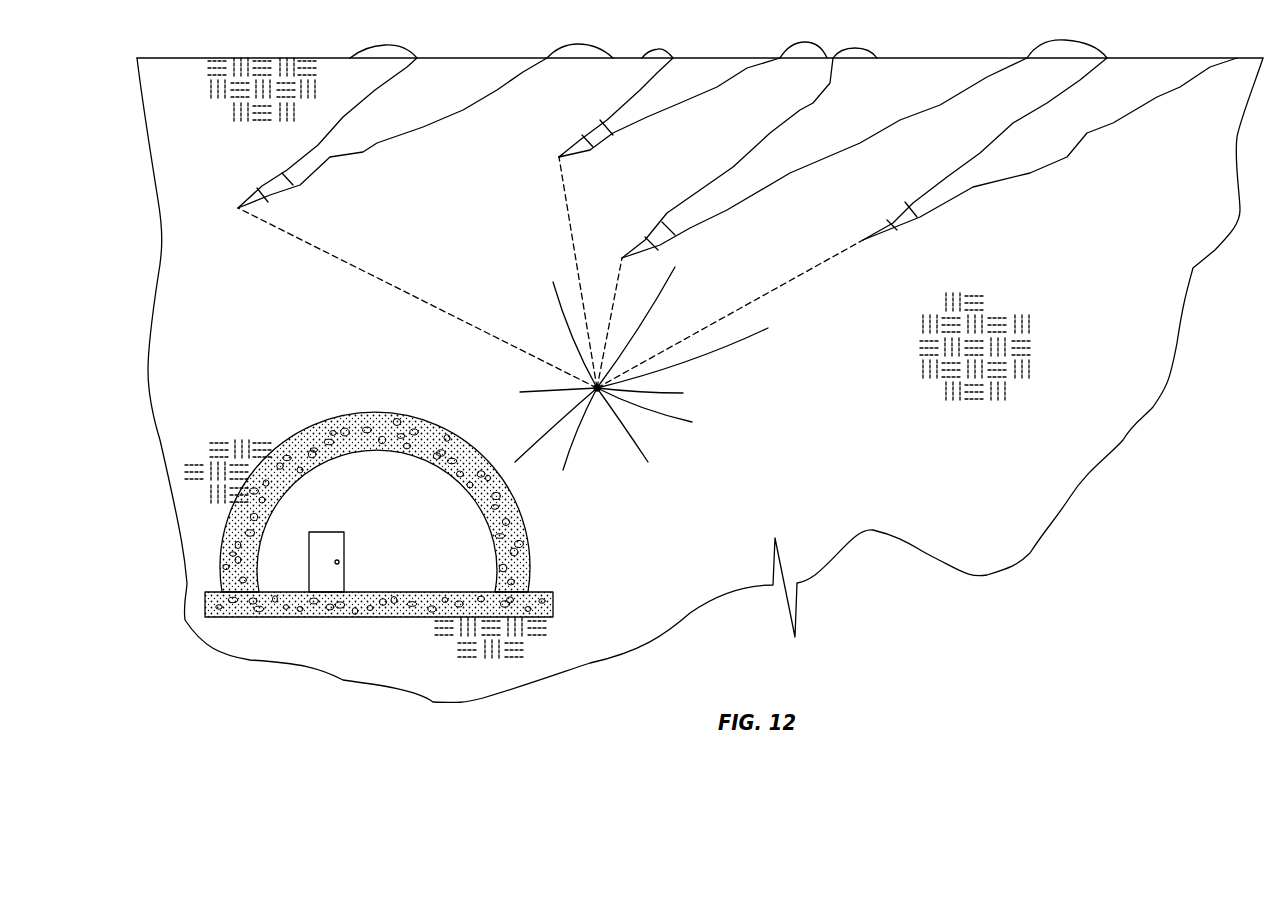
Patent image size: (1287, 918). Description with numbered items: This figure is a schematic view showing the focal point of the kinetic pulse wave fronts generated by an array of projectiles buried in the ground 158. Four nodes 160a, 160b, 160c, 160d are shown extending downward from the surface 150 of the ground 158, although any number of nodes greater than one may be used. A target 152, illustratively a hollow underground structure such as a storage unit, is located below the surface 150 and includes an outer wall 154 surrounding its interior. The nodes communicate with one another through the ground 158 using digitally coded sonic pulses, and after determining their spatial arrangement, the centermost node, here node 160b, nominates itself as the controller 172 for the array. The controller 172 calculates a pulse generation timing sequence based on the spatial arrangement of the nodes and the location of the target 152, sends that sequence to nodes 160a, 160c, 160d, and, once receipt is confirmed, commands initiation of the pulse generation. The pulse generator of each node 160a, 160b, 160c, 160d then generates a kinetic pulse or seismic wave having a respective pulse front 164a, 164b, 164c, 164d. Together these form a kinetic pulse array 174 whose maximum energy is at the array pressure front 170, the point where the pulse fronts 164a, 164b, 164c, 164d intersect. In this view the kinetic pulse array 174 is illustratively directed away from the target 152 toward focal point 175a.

The surface 150 is at (337, 57).
The target 152 is at (366, 495).
The outer wall 154 is at (363, 432).
The ground 158 is at (1013, 488).
The node 160a is at (262, 200).
The node 160b is at (593, 137).
The node 160c is at (657, 233).
The node 160d is at (893, 220).
The pulse front 164a is at (663, 292).
The pulse front 164b is at (750, 338).
The pulse front 164c is at (673, 392).
The pulse front 164d is at (633, 447).
The array pressure front 170 is at (692, 422).
The controller 172 is at (556, 157).
The kinetic pulse array 174 is at (543, 378).
The focal point 175a is at (563, 470).